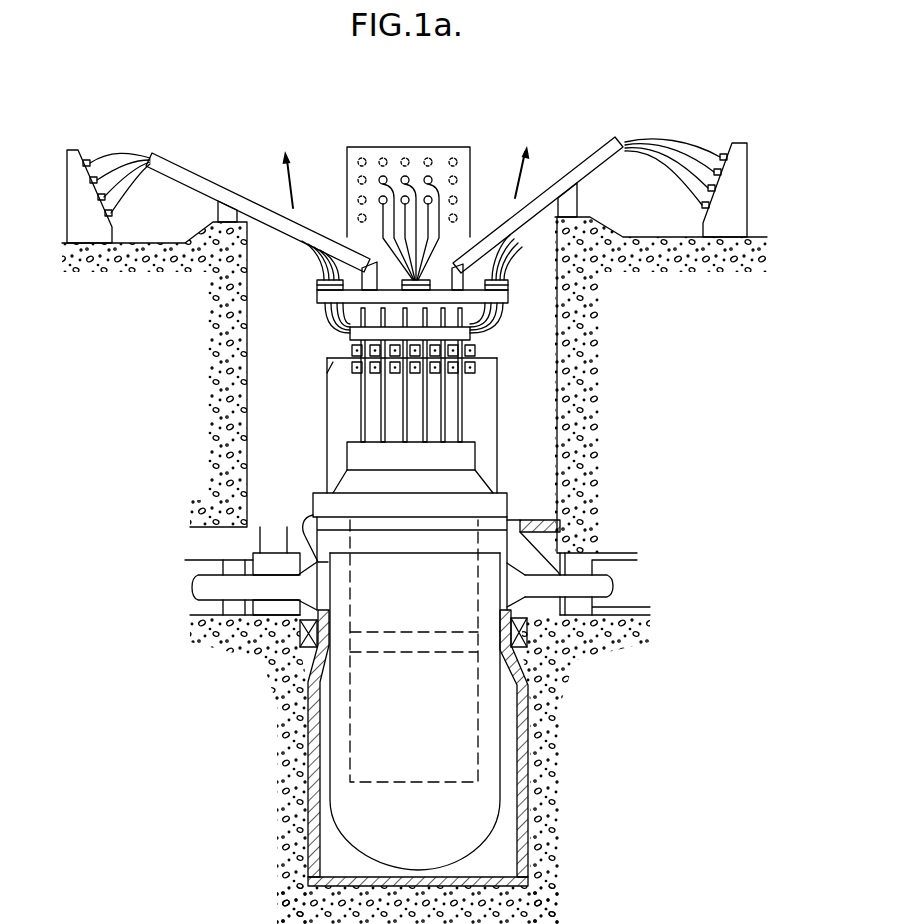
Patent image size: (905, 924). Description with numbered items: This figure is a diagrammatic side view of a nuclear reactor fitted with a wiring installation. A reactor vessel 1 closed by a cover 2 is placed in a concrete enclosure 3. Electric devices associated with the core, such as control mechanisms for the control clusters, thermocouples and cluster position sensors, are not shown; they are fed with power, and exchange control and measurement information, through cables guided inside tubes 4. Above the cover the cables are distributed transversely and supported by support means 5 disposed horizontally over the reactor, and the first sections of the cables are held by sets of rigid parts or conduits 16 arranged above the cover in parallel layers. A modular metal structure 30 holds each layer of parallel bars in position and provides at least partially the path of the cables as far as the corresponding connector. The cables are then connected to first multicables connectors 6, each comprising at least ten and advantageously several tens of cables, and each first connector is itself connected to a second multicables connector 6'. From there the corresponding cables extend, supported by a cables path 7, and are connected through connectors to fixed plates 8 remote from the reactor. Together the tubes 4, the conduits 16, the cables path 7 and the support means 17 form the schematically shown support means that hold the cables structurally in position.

The reactor vessel 1 is at (478, 710).
The cover 2 is at (480, 502).
The concrete enclosure 3 is at (563, 417).
The tubes 4 is at (448, 413).
The support means 5 is at (340, 347).
The first multicables connector 6 is at (404, 297).
The second multicables connector 6' is at (402, 257).
The cables path 7 is at (596, 163).
The fixed plates 8 is at (729, 174).
The rigid parts or conduits 16 is at (473, 368).
The support means 17 is at (474, 294).
The modular metal structure 30 is at (497, 457).